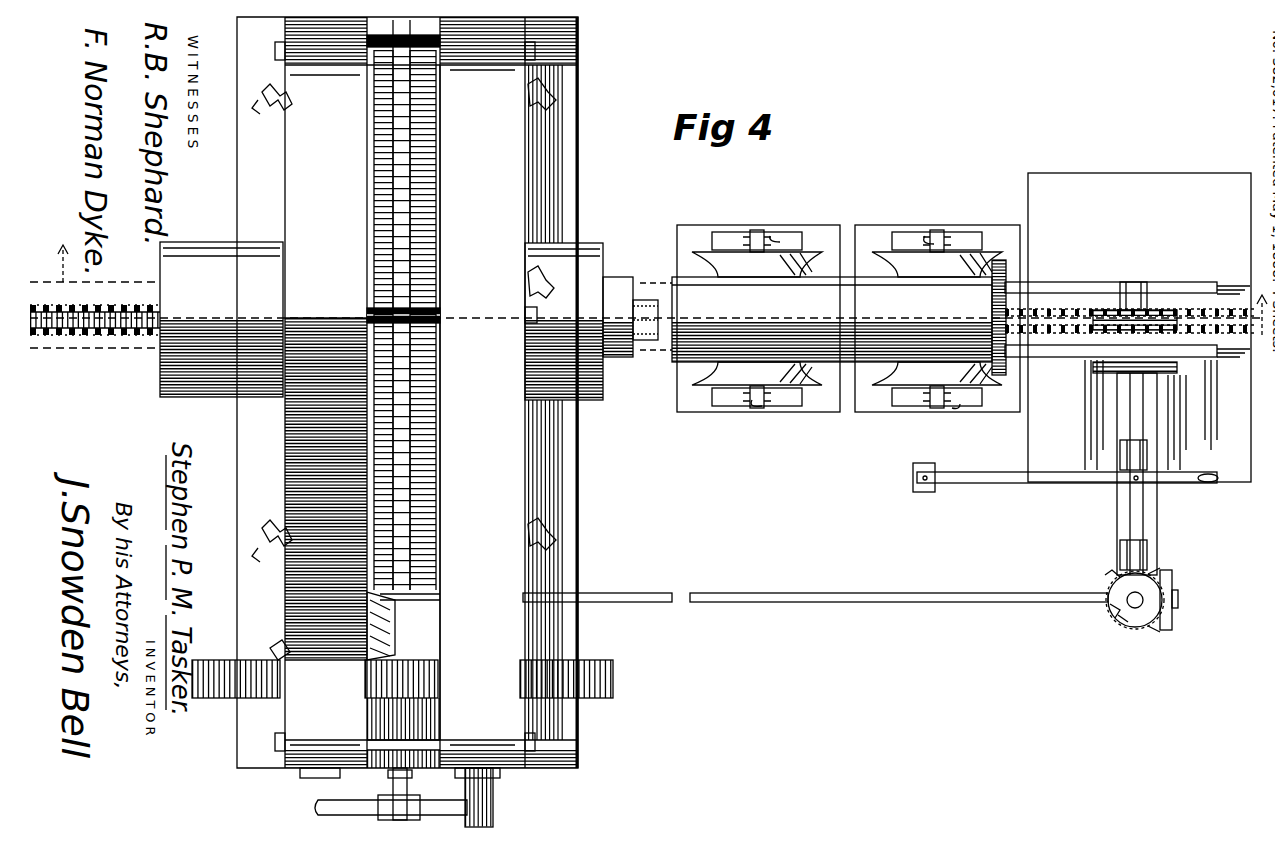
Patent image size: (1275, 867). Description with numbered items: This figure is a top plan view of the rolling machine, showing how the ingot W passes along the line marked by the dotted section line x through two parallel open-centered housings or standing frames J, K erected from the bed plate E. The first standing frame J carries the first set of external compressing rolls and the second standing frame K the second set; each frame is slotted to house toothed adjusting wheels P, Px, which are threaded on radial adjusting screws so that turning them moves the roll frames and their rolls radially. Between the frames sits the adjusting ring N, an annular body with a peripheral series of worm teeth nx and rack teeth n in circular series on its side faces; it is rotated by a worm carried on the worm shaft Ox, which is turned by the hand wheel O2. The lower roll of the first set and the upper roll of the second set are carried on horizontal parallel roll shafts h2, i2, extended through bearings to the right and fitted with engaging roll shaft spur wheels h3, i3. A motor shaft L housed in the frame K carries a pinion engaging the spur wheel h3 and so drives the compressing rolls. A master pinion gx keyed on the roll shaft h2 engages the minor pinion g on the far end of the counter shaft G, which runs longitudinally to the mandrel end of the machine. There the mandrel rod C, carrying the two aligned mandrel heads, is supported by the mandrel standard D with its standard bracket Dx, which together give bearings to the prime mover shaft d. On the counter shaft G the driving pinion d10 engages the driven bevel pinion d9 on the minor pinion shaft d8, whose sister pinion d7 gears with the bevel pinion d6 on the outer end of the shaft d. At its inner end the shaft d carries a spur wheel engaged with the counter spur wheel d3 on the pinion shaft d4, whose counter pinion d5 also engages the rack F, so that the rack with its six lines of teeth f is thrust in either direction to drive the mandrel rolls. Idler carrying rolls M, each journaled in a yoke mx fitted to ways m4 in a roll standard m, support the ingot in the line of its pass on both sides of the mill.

The bed plate E is at (580, 750).
The standing frame J is at (326, 405).
The standing frame K is at (463, 402).
The adjusting ring N is at (405, 58).
The rack teeth n is at (380, 258).
The worm teeth nx is at (422, 140).
The adjusting wheel P is at (272, 115).
The adjusting wheel Px is at (540, 105).
The ingot W is at (579, 321).
The rack F is at (110, 332).
The section line x is at (648, 296).
The rack teeth f is at (645, 312).
The mandrel rod C is at (839, 317).
The idler carrying roll M is at (848, 318).
The roll standard m is at (847, 319).
The ways m4 is at (777, 240).
The yoke mx is at (930, 238).
The mandrel standard D is at (1195, 293).
The pinion shaft d4 is at (1140, 285).
The counter pinion d5 is at (1150, 315).
The counter spur wheel d3 is at (1163, 374).
The standard bracket Dx is at (1158, 505).
The prime mover shaft d is at (1130, 510).
The bevel pinion d6 is at (1112, 575).
The sister pinion d7 is at (1134, 615).
The minor pinion shaft d8 is at (1117, 605).
The driven bevel pinion d9 is at (1118, 616).
The driving pinion d10 is at (1165, 580).
The counter shaft G is at (600, 594).
The minor pinion g is at (365, 638).
The master pinion gx is at (272, 654).
The roll shaft spur wheel h3 is at (240, 690).
The roll shaft spur wheel i3 is at (501, 709).
The worm shaft Ox is at (397, 785).
The hand wheel O2 is at (355, 805).
The roll shaft h2 is at (310, 779).
The roll shaft i2 is at (465, 776).
The motor shaft L is at (495, 813).